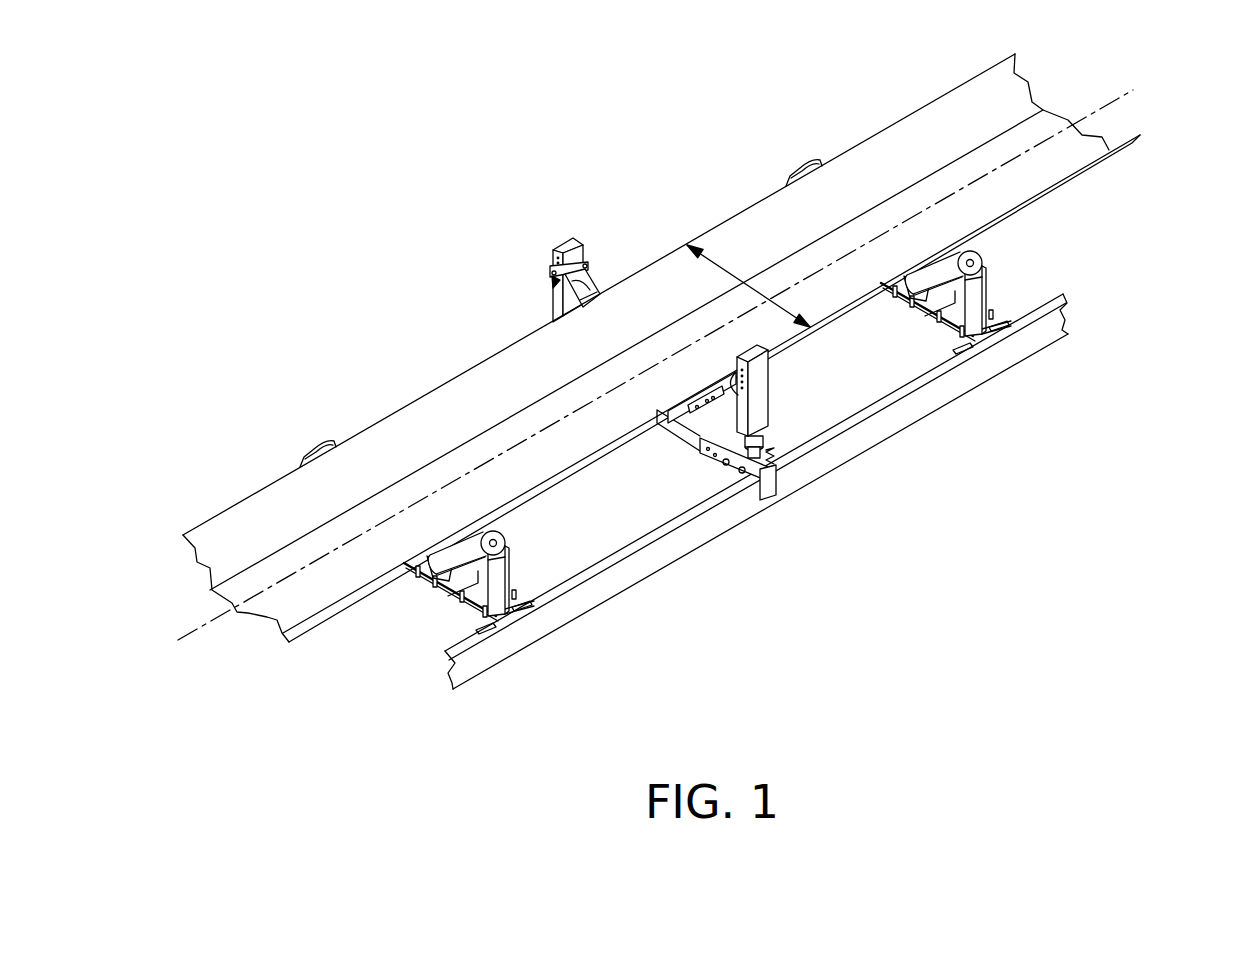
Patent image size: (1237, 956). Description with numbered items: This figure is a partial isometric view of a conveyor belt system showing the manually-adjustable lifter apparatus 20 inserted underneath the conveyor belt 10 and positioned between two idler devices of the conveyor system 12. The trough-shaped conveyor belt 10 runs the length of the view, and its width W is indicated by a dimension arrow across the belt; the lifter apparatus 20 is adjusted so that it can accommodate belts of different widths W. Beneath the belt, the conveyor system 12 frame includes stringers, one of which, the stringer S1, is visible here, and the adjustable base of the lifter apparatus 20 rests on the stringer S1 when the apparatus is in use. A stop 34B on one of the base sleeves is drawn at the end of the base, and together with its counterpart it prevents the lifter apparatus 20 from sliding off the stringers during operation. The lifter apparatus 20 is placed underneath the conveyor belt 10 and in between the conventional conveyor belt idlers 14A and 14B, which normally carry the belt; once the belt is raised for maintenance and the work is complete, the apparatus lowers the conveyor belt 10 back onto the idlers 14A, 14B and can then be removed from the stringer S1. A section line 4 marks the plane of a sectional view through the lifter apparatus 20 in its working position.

The conveyor belt 10 is at (470, 405).
The conveyor system 12 is at (838, 491).
The stringer S1 is at (622, 575).
The conveyor belt idler 14A is at (423, 593).
The conveyor belt idler 14B is at (1008, 250).
The adjustable lifter apparatus 20 is at (889, 467).
The stop 34B is at (842, 527).
The width of the conveyor belt W is at (725, 267).
The section line 4- 4 is at (1133, 90).